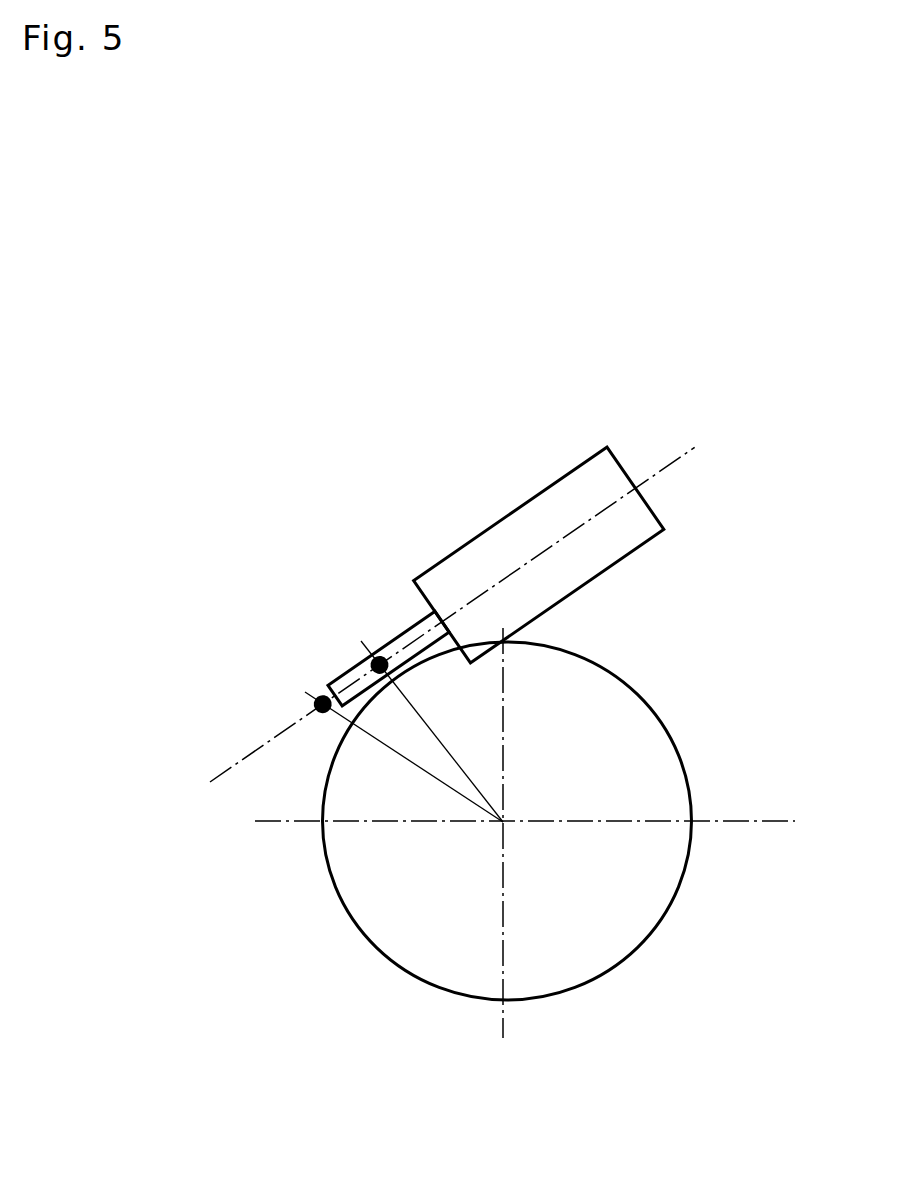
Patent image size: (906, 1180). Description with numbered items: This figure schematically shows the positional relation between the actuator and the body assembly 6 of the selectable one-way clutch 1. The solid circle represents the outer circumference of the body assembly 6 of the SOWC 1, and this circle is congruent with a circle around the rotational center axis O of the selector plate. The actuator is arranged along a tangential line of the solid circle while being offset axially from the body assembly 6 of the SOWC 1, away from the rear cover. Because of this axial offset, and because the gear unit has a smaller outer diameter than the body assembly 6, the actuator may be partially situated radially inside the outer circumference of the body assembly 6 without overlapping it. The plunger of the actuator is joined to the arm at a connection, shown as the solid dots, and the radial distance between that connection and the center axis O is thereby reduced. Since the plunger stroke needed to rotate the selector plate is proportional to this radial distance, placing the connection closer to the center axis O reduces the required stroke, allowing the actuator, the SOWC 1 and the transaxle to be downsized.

The selectable one-way clutch 1 is at (529, 815).
The body assembly 6 is at (632, 676).
The rotational center axis O is at (503, 822).